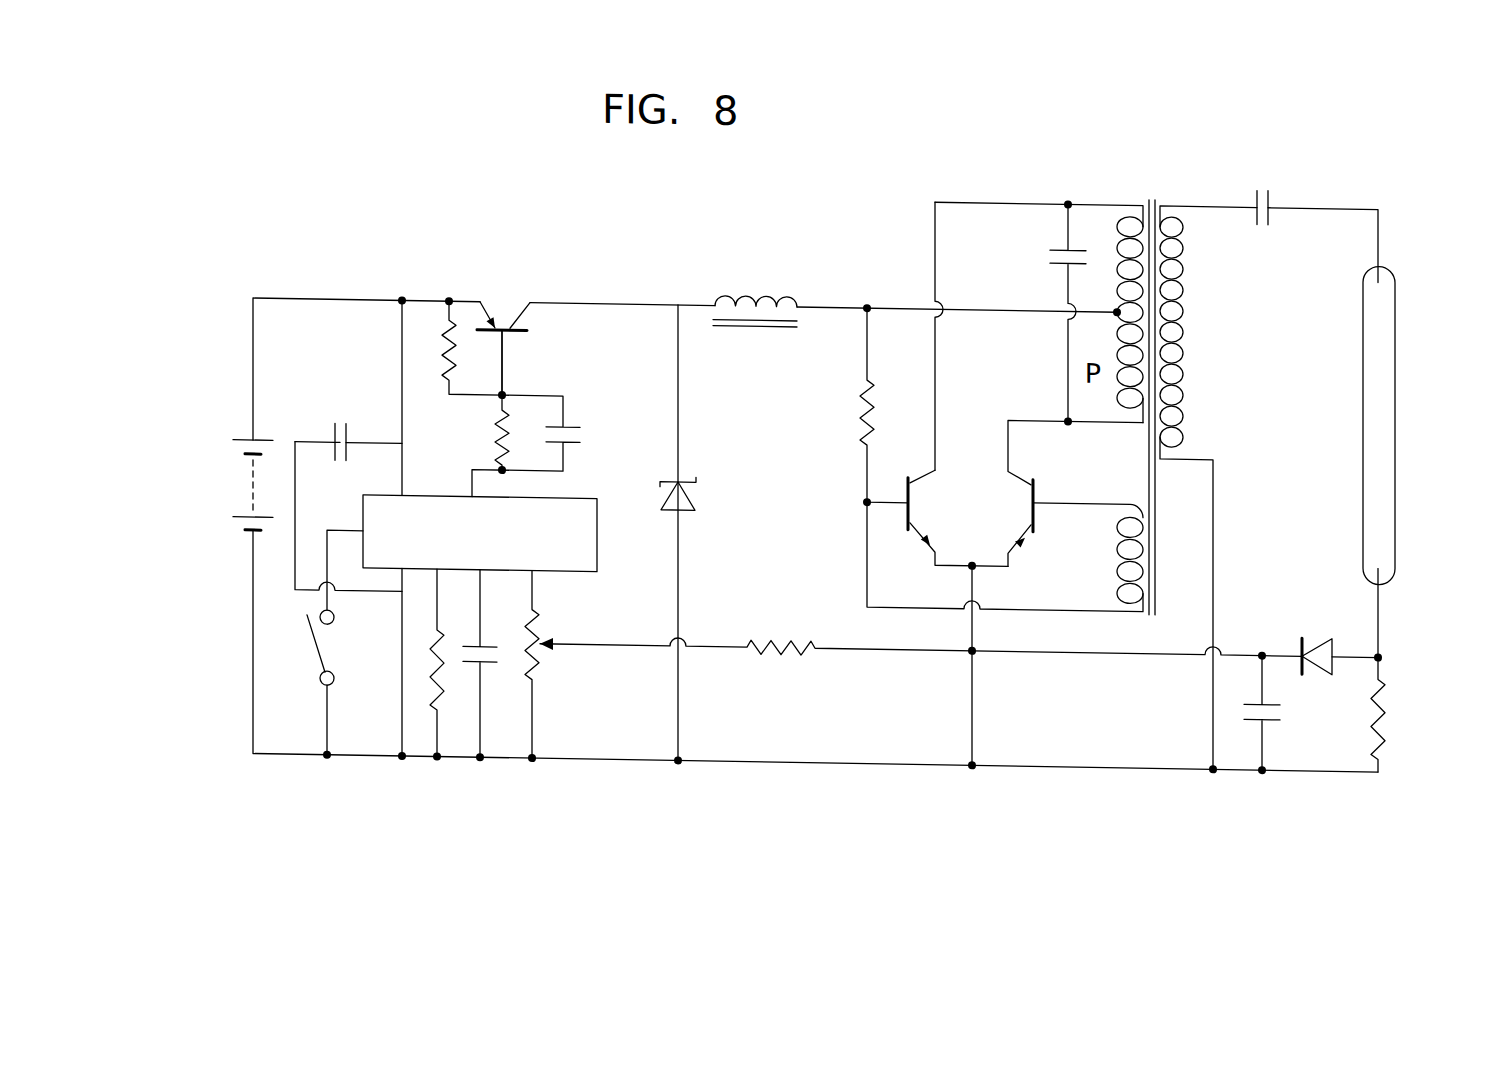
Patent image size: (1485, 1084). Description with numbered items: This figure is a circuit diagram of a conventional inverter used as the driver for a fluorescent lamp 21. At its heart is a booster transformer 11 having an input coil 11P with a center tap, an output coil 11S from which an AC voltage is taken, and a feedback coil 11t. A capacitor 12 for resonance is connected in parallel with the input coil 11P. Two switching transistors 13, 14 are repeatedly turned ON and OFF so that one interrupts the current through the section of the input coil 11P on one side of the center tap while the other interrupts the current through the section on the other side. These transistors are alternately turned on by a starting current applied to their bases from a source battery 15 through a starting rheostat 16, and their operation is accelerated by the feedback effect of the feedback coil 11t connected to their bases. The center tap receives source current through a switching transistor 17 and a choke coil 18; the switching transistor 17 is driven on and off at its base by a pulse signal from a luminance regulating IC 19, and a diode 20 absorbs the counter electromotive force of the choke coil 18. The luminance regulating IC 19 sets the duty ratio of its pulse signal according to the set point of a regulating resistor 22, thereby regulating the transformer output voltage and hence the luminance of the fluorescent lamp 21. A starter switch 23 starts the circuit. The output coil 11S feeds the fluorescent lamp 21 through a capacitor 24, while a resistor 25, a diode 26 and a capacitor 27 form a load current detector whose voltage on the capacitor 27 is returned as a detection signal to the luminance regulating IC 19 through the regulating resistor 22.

The booster transformer 11 is at (1157, 192).
The input coil 11P is at (1117, 239).
The output coil 11S is at (1192, 311).
The feedback coil 11t is at (1117, 536).
The capacitor for resonance 12 is at (1047, 242).
The switching transistor 13 is at (905, 502).
The switching transistor 14 is at (1038, 469).
The source battery 15 is at (262, 487).
The starting rheostat 16 is at (853, 408).
The switching transistor 17 is at (518, 319).
The choke coil 18 is at (763, 282).
The luminance regulating IC 19 is at (597, 532).
The diode 20 is at (688, 485).
The fluorescent lamp 21 is at (1378, 353).
The regulating resistor 22 is at (542, 655).
The starter switch 23 is at (313, 649).
The capacitor 24 is at (1262, 168).
The resistor 25 is at (1383, 691).
The diode 26 is at (1327, 622).
The capacitor 27 is at (1287, 695).